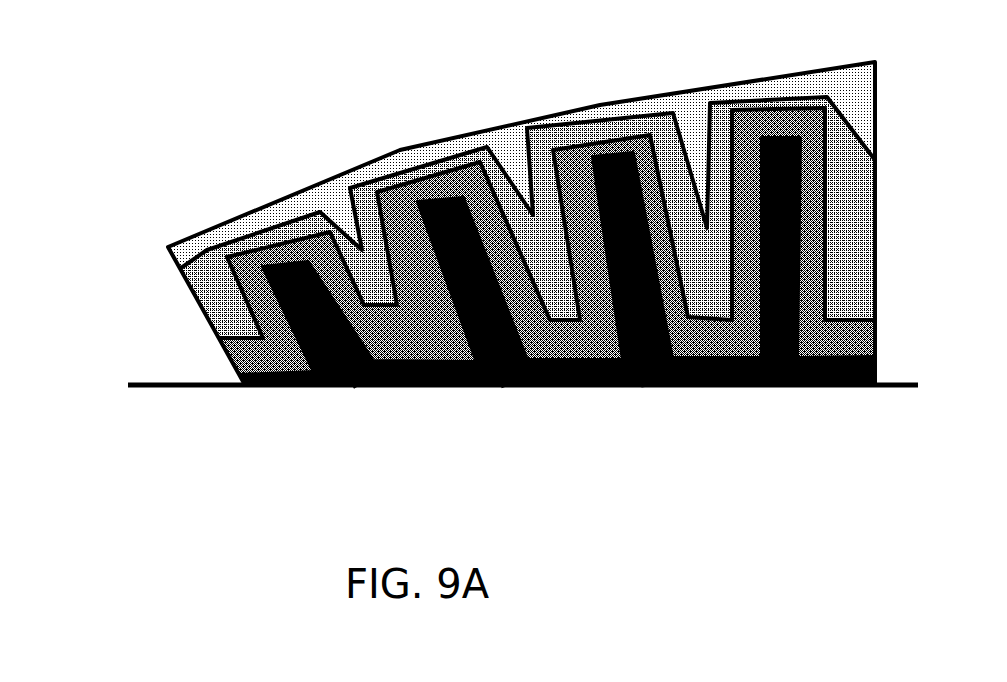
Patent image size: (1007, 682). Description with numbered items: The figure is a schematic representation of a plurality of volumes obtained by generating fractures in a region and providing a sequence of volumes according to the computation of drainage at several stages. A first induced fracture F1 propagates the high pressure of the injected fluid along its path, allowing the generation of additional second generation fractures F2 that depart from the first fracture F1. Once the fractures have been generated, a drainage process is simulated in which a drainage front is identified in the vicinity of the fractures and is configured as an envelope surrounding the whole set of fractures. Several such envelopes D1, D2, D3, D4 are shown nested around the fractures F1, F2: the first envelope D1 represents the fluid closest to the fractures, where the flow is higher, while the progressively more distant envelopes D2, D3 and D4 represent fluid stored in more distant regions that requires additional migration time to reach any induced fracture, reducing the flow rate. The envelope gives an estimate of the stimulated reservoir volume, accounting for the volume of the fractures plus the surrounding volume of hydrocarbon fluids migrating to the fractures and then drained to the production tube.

The first envelope D1 is at (252, 248).
The second envelope D2 is at (222, 262).
The third envelope D3 is at (192, 258).
The fourth envelope D4 is at (188, 260).
The first fracture F1 is at (316, 387).
The second generation fractures F2 is at (460, 270).